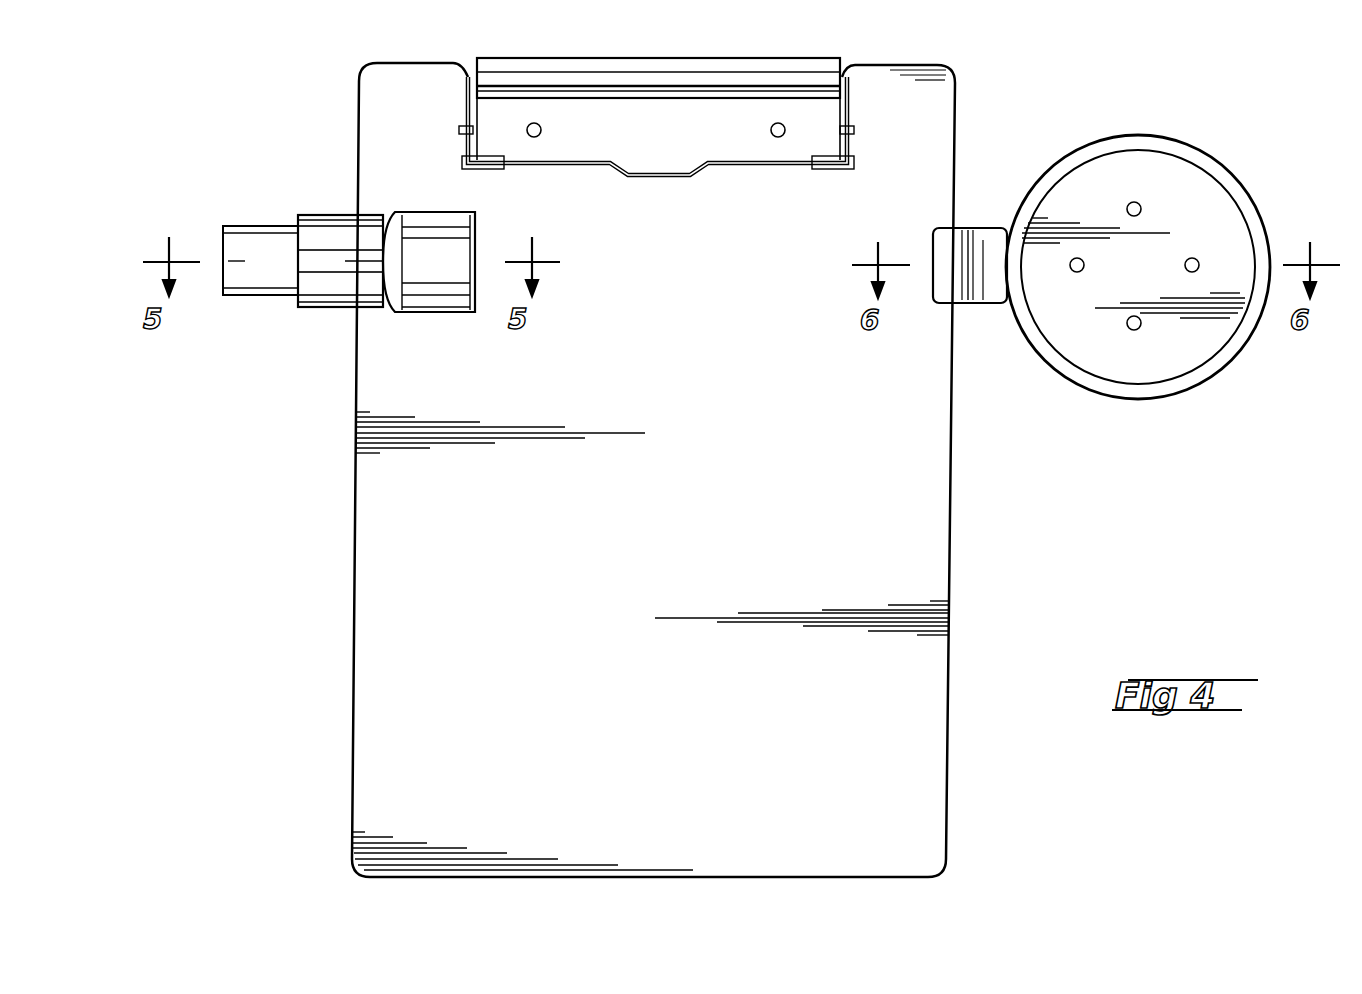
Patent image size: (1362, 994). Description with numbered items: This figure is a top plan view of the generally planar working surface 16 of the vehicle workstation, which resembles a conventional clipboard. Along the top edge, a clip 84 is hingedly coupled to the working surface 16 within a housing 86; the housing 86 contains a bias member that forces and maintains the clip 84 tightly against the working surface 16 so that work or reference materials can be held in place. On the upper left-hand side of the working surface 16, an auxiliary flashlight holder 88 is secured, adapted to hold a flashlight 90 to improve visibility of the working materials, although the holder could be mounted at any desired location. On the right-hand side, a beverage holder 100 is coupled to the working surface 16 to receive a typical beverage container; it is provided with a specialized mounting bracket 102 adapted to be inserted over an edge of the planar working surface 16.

The working surface 16 is at (940, 72).
The clip 84 is at (670, 178).
The housing 86 is at (665, 70).
The auxiliary flashlight holder 88 is at (330, 218).
The flashlight 90 is at (449, 270).
The beverage holder 100 is at (1132, 147).
The mounting bracket 102 is at (952, 286).